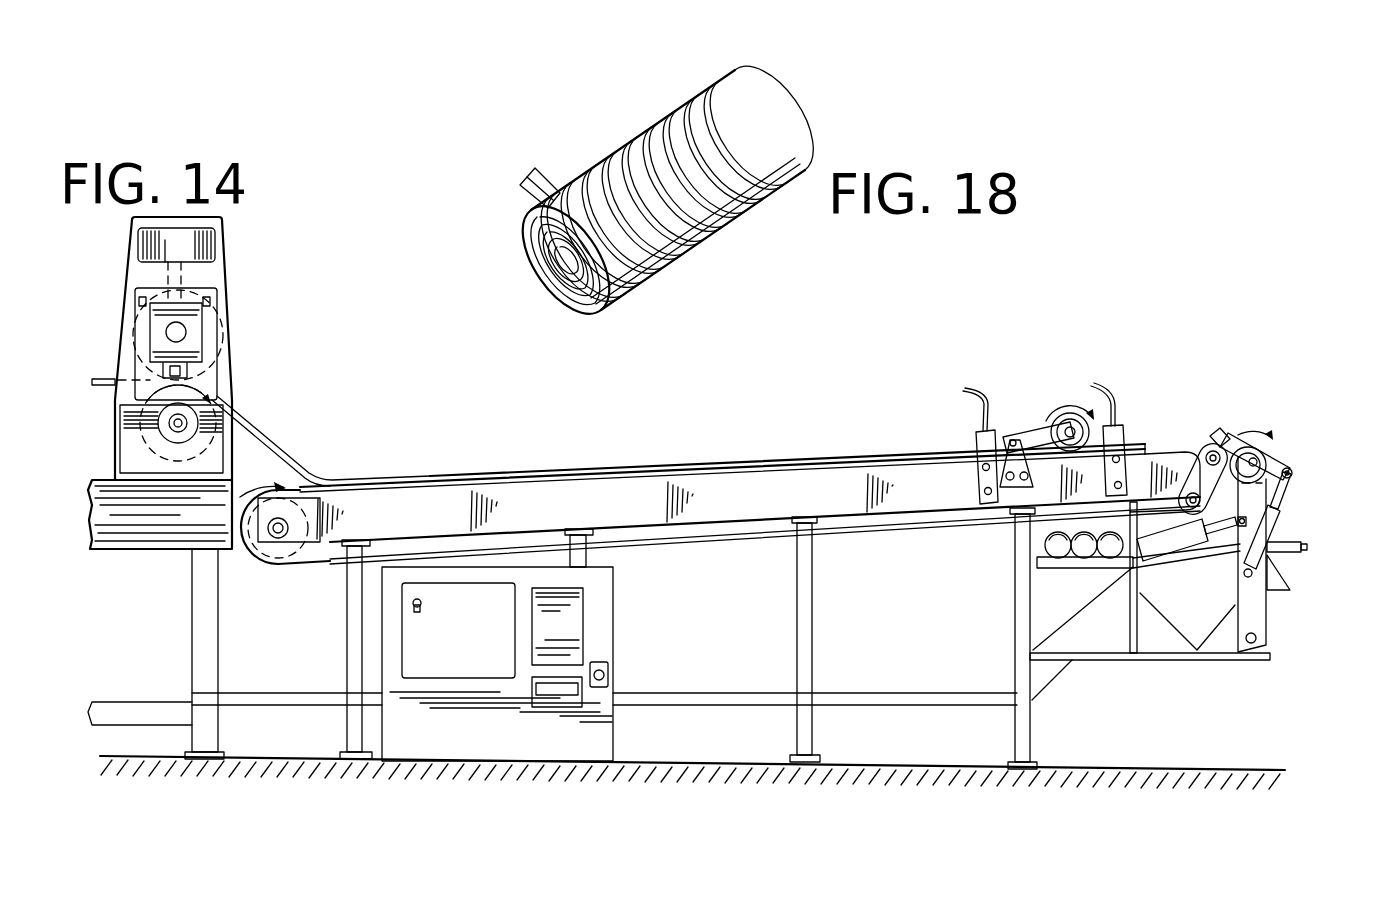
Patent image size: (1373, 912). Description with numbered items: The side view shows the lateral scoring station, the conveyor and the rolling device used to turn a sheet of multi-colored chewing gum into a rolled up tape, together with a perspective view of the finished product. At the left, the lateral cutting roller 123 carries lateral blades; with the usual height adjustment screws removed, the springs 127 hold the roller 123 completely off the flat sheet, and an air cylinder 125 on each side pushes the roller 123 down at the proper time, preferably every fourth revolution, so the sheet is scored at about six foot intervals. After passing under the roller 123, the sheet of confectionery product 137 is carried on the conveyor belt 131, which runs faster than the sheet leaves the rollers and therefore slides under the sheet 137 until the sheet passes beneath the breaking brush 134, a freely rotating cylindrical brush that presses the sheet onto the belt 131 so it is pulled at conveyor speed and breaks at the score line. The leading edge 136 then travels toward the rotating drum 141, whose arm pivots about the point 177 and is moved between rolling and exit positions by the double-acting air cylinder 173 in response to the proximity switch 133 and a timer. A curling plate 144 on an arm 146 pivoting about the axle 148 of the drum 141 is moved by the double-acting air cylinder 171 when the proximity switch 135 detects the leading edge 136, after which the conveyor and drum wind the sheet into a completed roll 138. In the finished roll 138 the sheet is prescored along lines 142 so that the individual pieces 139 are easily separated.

In FIG. 14, the lateral cutting roller 123 is at (212, 357).
In FIG. 14, the air cylinder 125 is at (160, 243).
In FIG. 14, the springs 127 is at (212, 363).
In FIG. 14, the conveyor belt 131 is at (720, 575).
In FIG. 14, the proximity switch 133 is at (978, 432).
In FIG. 14, the breaking brush 134 is at (1050, 410).
In FIG. 14, the proximity switch 135 is at (1113, 423).
In FIG. 14, the leading edge 136 is at (405, 477).
In FIG. 14, the sheet of confectionery product 137 is at (340, 475).
In FIG. 18, the roll 138 is at (732, 238).
In FIG. 18, the individual pieces 139 is at (529, 172).
In FIG. 14, the rotating drum 141 is at (1282, 460).
In FIG. 18, the prescored lines 142 is at (720, 92).
In FIG. 14, the curling plate 144 is at (1218, 434).
In FIG. 14, the arm 146 is at (1237, 440).
In FIG. 14, the axle 148 is at (1290, 450).
In FIG. 14, the double-acting air cylinder 171 is at (1268, 530).
In FIG. 14, the double-acting air cylinder 173 is at (1183, 540).
In FIG. 14, the pivot point 177 is at (1252, 644).